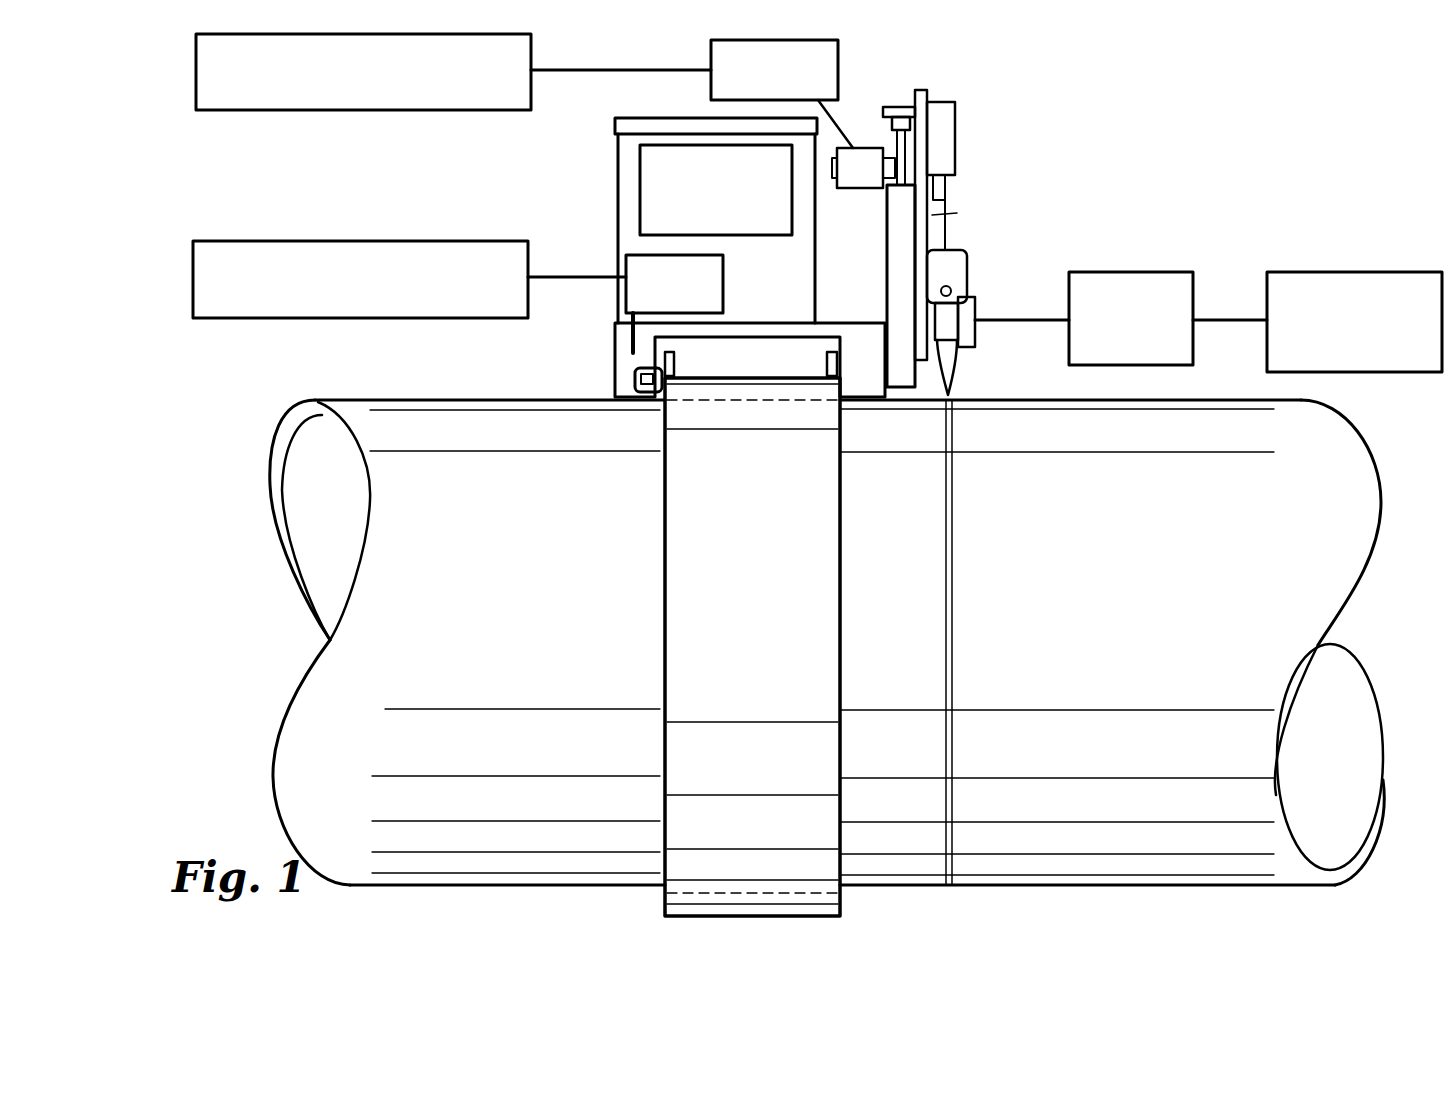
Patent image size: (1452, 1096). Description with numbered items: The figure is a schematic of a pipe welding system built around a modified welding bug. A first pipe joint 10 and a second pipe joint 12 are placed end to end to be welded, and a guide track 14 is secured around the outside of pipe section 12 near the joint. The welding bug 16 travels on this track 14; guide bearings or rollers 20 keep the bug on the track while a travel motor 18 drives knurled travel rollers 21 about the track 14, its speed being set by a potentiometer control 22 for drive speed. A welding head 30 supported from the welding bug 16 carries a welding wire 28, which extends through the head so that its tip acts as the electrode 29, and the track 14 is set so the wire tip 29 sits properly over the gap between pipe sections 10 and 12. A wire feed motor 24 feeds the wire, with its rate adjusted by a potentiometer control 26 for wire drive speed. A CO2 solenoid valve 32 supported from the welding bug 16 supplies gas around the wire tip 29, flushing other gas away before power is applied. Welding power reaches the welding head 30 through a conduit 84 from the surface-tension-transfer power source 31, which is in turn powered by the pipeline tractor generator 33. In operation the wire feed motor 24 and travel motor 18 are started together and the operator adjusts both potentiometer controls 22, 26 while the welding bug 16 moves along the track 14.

The first pipe joint 10 is at (1185, 485).
The second pipe joint 12 is at (476, 466).
The guide track 14 is at (712, 640).
The welding bug 16 is at (600, 164).
The travel motor 18 is at (723, 289).
The guide bearings or rollers 20 is at (650, 381).
The knurled travel rollers 21 is at (672, 362).
The potentiometer control (drive speed) 22 is at (279, 319).
The wire feed motor 24 is at (838, 62).
The potentiometer control (wire drive speed) 26 is at (280, 112).
The welding wire 28 is at (950, 240).
The electrode (welding wire tip) 29 is at (955, 396).
The welding head 30 is at (955, 270).
The STT power source 31 is at (1160, 272).
The CO2 solenoid valve 32 is at (942, 134).
The pipeline tractor generator 33 is at (1378, 271).
The conduit 84 is at (1015, 312).